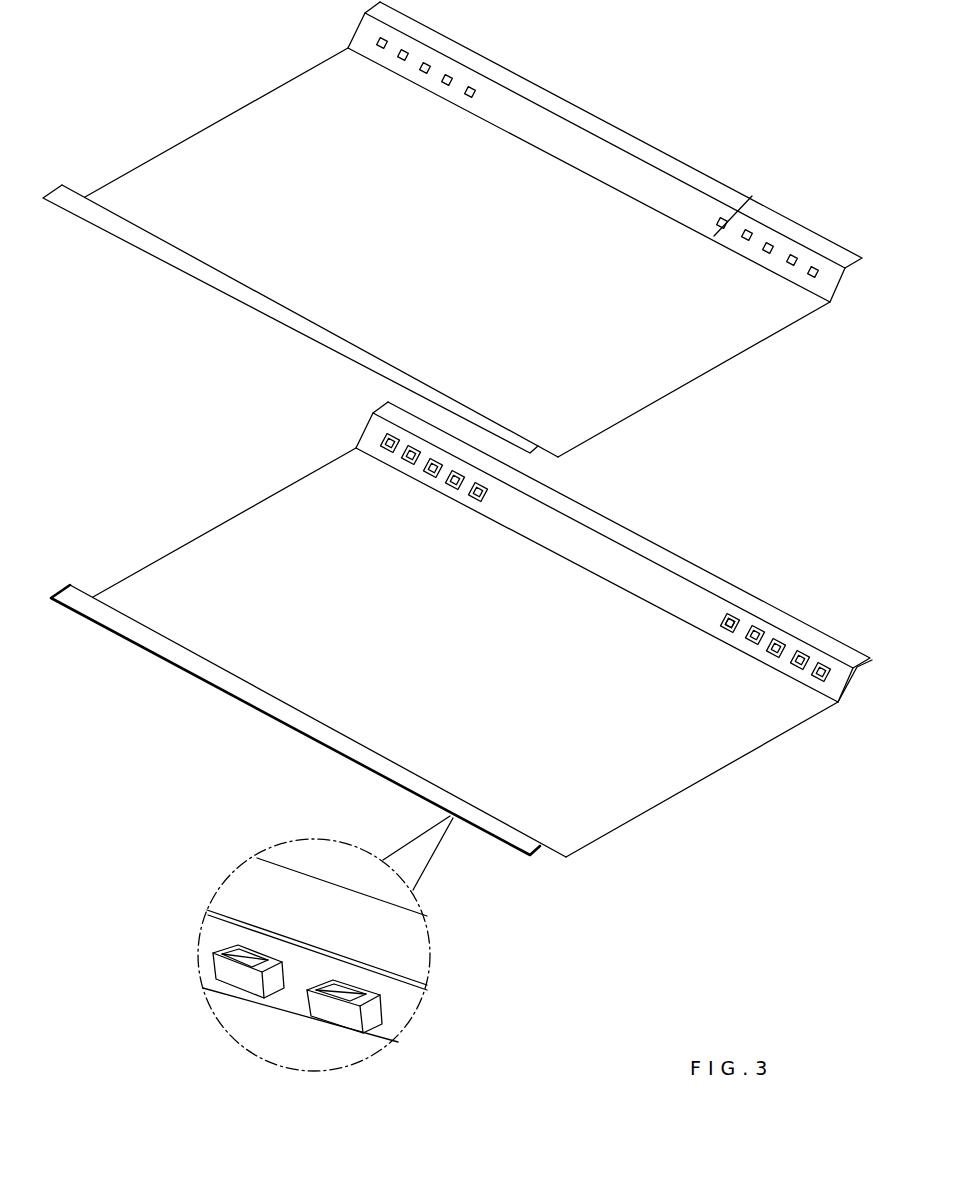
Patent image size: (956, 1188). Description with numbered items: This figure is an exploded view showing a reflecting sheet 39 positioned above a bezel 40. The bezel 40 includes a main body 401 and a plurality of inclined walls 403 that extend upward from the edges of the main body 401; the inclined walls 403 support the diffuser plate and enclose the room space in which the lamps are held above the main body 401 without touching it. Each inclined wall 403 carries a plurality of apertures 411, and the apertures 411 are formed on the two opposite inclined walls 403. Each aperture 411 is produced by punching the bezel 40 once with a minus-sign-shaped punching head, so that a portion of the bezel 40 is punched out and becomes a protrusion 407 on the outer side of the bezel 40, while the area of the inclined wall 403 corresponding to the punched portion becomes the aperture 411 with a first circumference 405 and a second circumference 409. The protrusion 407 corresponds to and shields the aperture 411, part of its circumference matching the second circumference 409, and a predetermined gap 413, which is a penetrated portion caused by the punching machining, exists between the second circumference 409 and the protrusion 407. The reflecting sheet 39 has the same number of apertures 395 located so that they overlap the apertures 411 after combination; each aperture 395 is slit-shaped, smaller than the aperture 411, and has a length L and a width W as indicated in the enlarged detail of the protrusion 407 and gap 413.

The reflecting sheet 39 is at (452, 229).
The aperture of the reflecting sheet 395 is at (745, 210).
The bezel 40 is at (472, 736).
The main body 401 is at (161, 566).
The inclined wall 403 is at (620, 527).
The first circumference 405 is at (723, 630).
The protrusion 407 is at (753, 625).
The second circumference 409 is at (733, 613).
The aperture 411 is at (841, 702).
The predetermined gap 413 is at (381, 995).